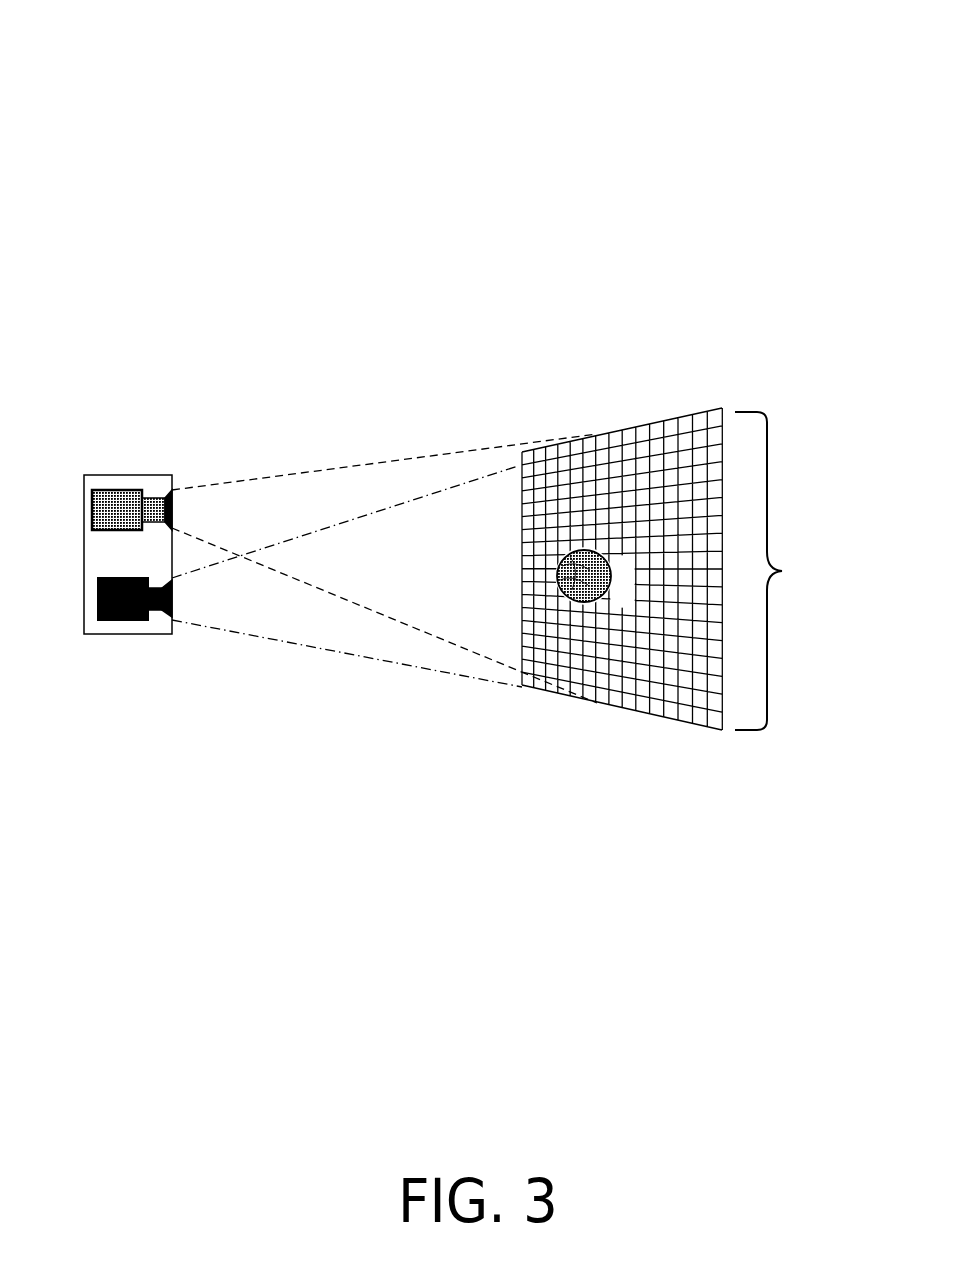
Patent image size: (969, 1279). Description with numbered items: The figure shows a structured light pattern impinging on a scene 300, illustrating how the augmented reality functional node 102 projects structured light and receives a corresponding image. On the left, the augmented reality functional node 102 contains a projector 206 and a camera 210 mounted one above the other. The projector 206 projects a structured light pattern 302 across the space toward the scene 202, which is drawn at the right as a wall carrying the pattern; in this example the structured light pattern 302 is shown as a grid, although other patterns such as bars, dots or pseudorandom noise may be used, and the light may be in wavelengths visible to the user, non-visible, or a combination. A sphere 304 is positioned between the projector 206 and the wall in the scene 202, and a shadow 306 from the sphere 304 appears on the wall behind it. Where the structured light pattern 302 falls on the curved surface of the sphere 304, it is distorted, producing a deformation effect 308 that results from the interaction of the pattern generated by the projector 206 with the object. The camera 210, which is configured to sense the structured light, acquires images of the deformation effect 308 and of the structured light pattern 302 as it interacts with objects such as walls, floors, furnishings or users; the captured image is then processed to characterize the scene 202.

The structured light pattern impinging on the scene 300 is at (761, 41).
The augmented reality functional node 102 is at (103, 633).
The projector 206 is at (115, 512).
The camera 210 is at (134, 615).
The structured light pattern 302 is at (518, 465).
The scene 202 is at (677, 569).
The sphere 304 is at (580, 548).
The shadow 306 is at (626, 562).
The deformation effect 308 is at (567, 588).